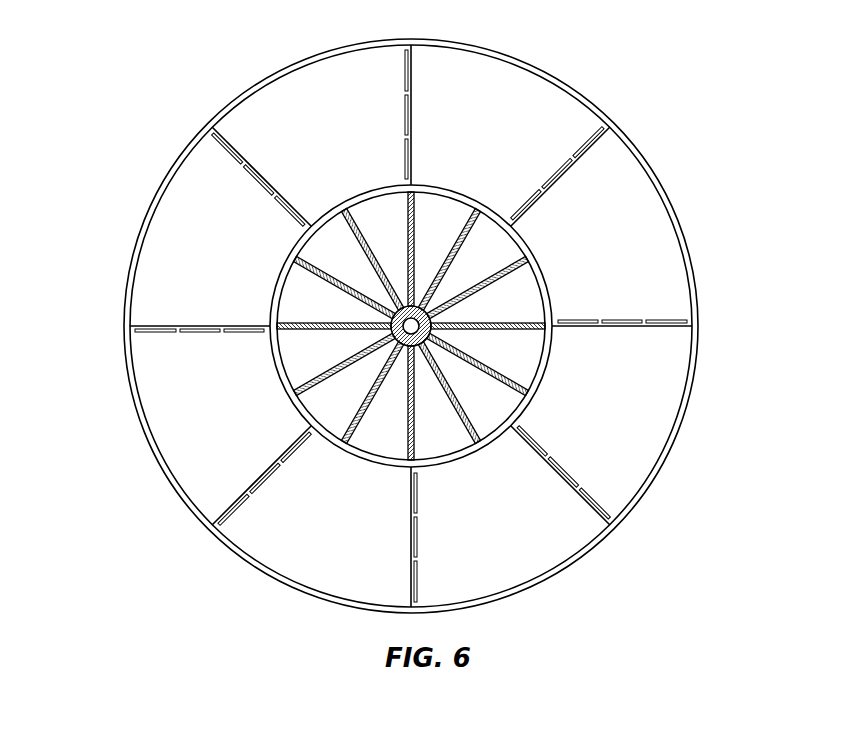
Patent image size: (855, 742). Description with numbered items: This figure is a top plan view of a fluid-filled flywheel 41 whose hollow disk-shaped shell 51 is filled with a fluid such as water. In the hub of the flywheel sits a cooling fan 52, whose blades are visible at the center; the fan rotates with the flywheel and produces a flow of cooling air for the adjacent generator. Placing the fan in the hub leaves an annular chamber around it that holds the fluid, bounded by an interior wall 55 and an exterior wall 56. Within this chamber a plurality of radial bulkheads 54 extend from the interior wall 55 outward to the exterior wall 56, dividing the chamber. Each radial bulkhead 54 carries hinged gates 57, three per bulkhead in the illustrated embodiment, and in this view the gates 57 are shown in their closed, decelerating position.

The flywheel 41 is at (130, 589).
The hollow disk-shaped shell 51 is at (676, 180).
The cooling fan 52 is at (522, 300).
The radial bulkheads 54 is at (409, 93).
The interior wall 55 is at (552, 358).
The exterior wall 56 is at (650, 490).
The hinged gates 57 is at (412, 97).